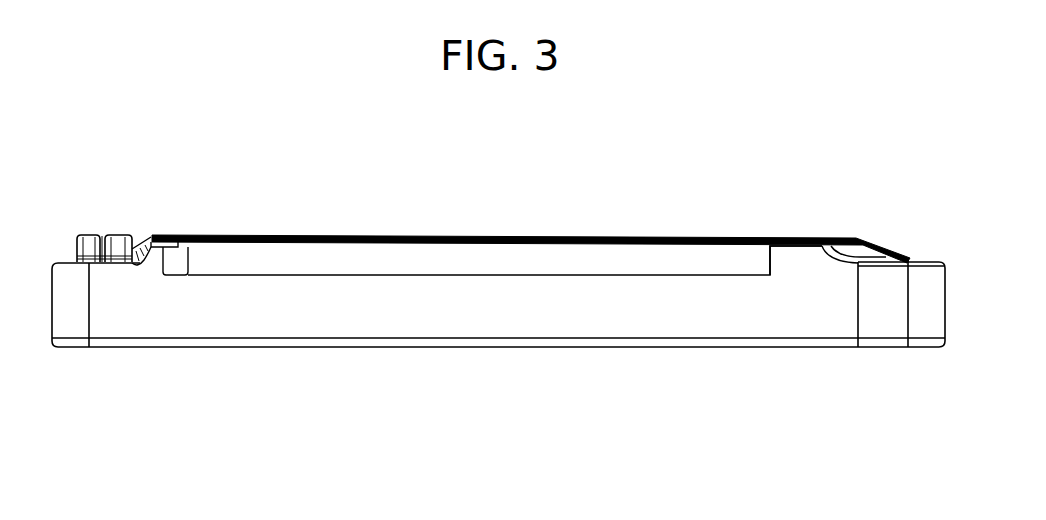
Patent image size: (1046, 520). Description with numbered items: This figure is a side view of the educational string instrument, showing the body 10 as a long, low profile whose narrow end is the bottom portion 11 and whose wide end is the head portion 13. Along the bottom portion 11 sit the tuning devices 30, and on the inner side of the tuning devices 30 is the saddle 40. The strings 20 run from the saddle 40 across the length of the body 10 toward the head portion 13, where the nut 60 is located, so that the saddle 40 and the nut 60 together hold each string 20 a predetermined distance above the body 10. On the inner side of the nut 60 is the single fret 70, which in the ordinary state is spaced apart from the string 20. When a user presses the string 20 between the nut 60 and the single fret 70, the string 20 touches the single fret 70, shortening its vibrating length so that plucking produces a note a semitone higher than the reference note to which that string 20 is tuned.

The body 10 is at (378, 315).
The bottom portion 11 is at (108, 313).
The head portion 13 is at (882, 325).
The string 20 is at (462, 235).
The tuning device 30 is at (87, 233).
The saddle 40 is at (157, 235).
The nut 60 is at (820, 240).
The single fret 70 is at (780, 238).